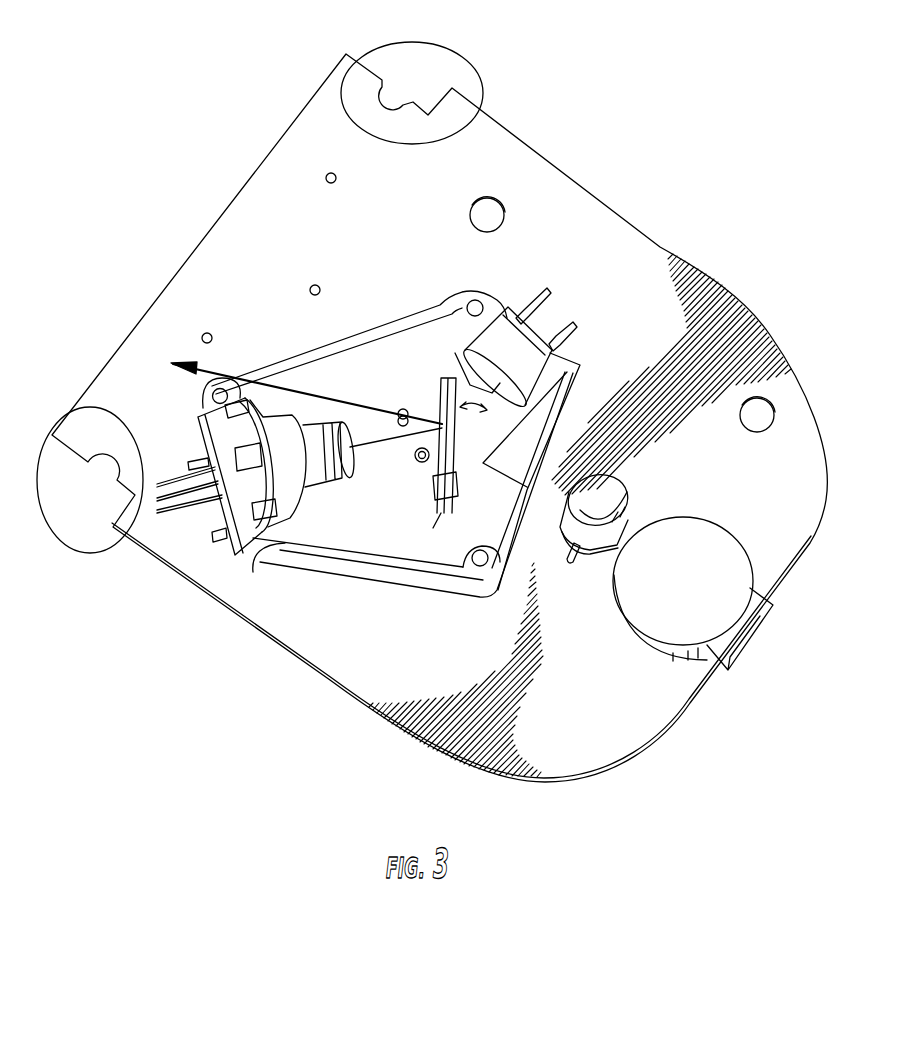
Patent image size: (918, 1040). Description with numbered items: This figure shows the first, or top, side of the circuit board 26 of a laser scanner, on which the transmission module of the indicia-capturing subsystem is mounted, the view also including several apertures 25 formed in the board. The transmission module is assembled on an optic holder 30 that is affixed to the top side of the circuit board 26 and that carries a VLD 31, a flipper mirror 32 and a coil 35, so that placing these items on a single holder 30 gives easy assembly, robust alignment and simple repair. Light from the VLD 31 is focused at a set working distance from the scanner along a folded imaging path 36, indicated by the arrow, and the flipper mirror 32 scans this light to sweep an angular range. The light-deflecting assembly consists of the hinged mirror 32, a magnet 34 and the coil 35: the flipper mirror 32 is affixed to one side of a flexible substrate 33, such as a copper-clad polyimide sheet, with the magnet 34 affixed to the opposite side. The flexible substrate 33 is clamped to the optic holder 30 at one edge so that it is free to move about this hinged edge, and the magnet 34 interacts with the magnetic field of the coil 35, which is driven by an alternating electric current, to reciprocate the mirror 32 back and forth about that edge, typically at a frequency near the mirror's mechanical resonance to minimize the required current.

The mounting apertures 25 is at (470, 60).
The circuit board 26 is at (630, 303).
The optic holder 30 is at (393, 528).
The VLD 31 is at (337, 423).
The flipper mirror 32 is at (402, 428).
The flexible substrate 33 is at (440, 500).
The magnet 34 is at (510, 462).
The coil 35 is at (527, 352).
The folded imaging path 36 is at (317, 395).